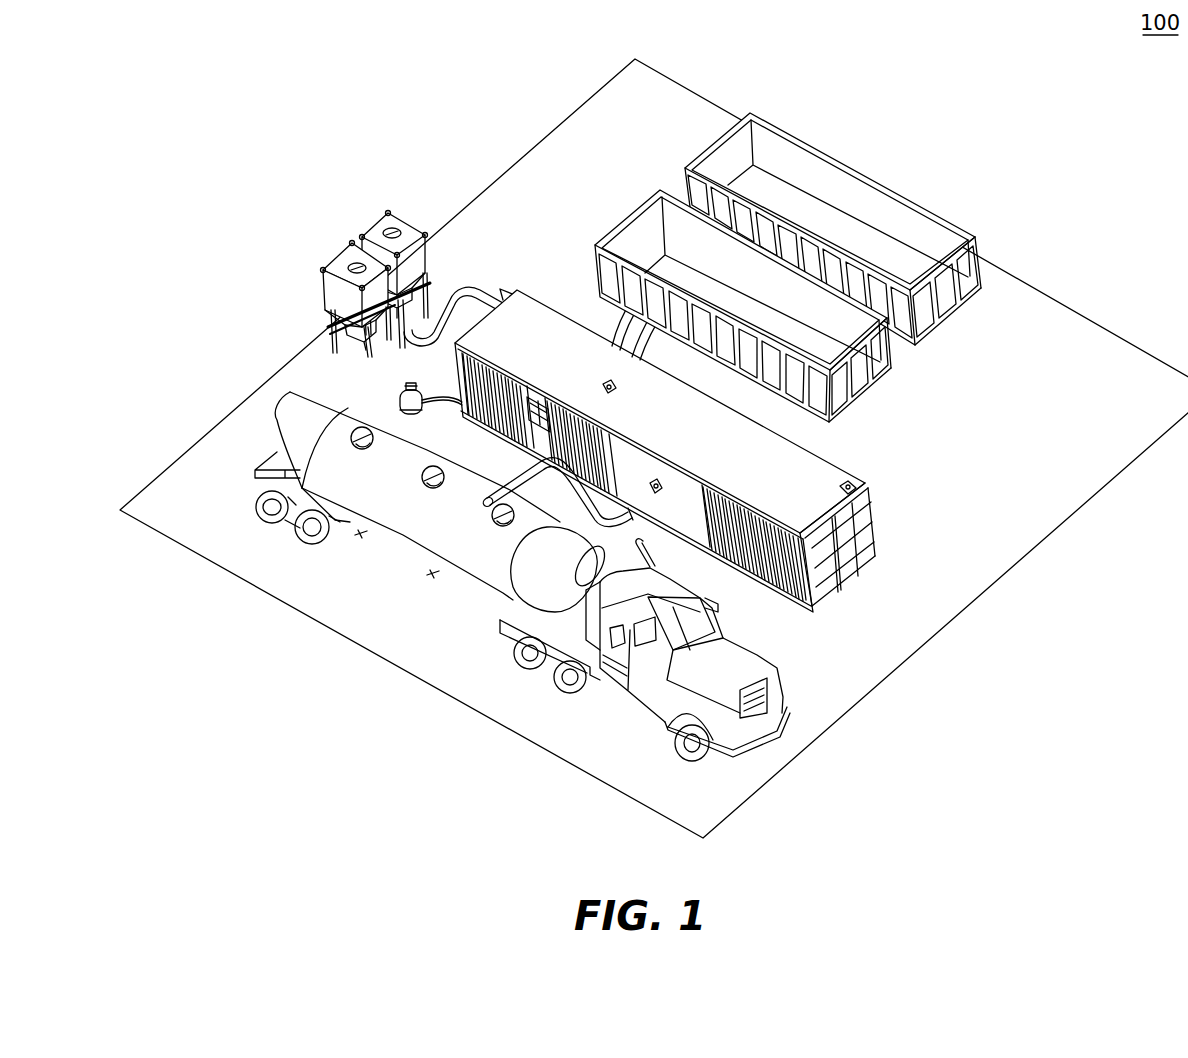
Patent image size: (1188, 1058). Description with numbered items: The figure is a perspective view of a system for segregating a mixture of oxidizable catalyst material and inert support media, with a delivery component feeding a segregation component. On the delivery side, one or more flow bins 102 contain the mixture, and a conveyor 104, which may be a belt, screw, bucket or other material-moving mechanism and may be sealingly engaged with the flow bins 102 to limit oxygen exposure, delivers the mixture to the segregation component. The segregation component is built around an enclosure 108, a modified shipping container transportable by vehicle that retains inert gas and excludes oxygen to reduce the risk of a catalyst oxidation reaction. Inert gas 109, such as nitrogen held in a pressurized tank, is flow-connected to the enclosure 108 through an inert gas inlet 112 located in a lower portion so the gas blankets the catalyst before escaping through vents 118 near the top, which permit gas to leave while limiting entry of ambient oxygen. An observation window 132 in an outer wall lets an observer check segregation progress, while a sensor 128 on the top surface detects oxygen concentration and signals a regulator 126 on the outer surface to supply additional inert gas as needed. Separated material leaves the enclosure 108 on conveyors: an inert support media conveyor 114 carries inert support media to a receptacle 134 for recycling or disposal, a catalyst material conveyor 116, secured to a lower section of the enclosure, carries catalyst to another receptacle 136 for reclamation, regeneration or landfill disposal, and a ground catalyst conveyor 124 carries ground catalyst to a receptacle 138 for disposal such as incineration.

The flow bins 102 is at (372, 219).
The conveyor 104 is at (475, 298).
The enclosure 108 is at (877, 568).
The inert gas 109 is at (398, 398).
The inert gas inlet 112 is at (457, 413).
The inert support media conveyor 114 is at (655, 246).
The catalyst material conveyor 116 is at (775, 175).
The vents 118 is at (848, 480).
The ground catalyst conveyor 124 is at (511, 475).
The regulator 126 is at (660, 496).
The sensor 128 is at (612, 393).
The observation window 132 is at (545, 404).
The receptacle 134 is at (860, 378).
The receptacle 136 is at (948, 300).
The receptacle 138 is at (410, 542).